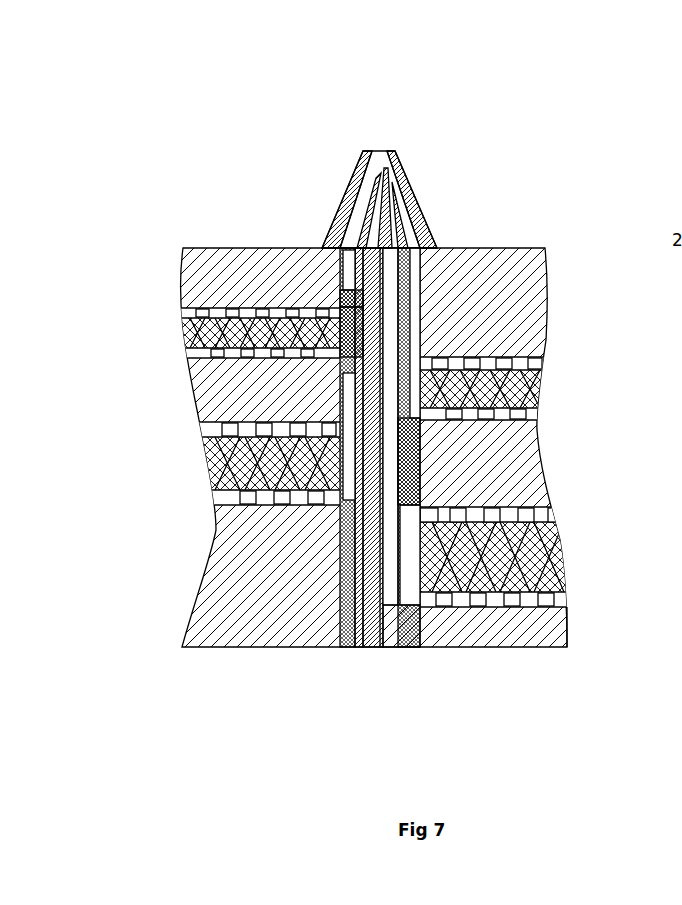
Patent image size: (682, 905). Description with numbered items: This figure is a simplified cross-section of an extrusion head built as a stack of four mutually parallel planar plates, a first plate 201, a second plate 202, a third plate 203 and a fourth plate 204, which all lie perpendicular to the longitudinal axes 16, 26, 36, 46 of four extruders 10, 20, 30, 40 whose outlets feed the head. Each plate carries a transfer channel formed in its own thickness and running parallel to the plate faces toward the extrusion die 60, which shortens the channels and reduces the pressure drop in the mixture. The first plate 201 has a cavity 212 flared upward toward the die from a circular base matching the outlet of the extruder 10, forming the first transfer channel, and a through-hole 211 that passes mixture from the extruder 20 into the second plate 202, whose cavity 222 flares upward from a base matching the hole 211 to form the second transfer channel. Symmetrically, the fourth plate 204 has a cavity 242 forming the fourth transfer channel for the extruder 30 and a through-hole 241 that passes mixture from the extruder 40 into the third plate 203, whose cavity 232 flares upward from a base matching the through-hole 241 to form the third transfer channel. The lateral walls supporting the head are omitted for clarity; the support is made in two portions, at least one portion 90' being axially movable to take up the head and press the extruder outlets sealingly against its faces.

The extruder 10 is at (205, 484).
The longitudinal axis 16 is at (212, 460).
The extruder 20 is at (175, 310).
The longitudinal axis 26 is at (185, 335).
The extruder 30 is at (562, 372).
The longitudinal axis 36 is at (548, 398).
The extruder 40 is at (574, 540).
The longitudinal axis 46 is at (576, 560).
The extrusion die 60 is at (358, 160).
The first plate 201 is at (352, 647).
The second plate 202 is at (372, 647).
The third plate 203 is at (388, 647).
The fourth plate 204 is at (410, 647).
The through-hole 211 is at (352, 323).
The cavity 212 is at (348, 298).
The cavity 222 is at (370, 287).
The cavity 232 is at (392, 330).
The through-hole 241 is at (413, 585).
The cavity 242 is at (410, 345).
The axially movable portion of support 90' is at (576, 671).